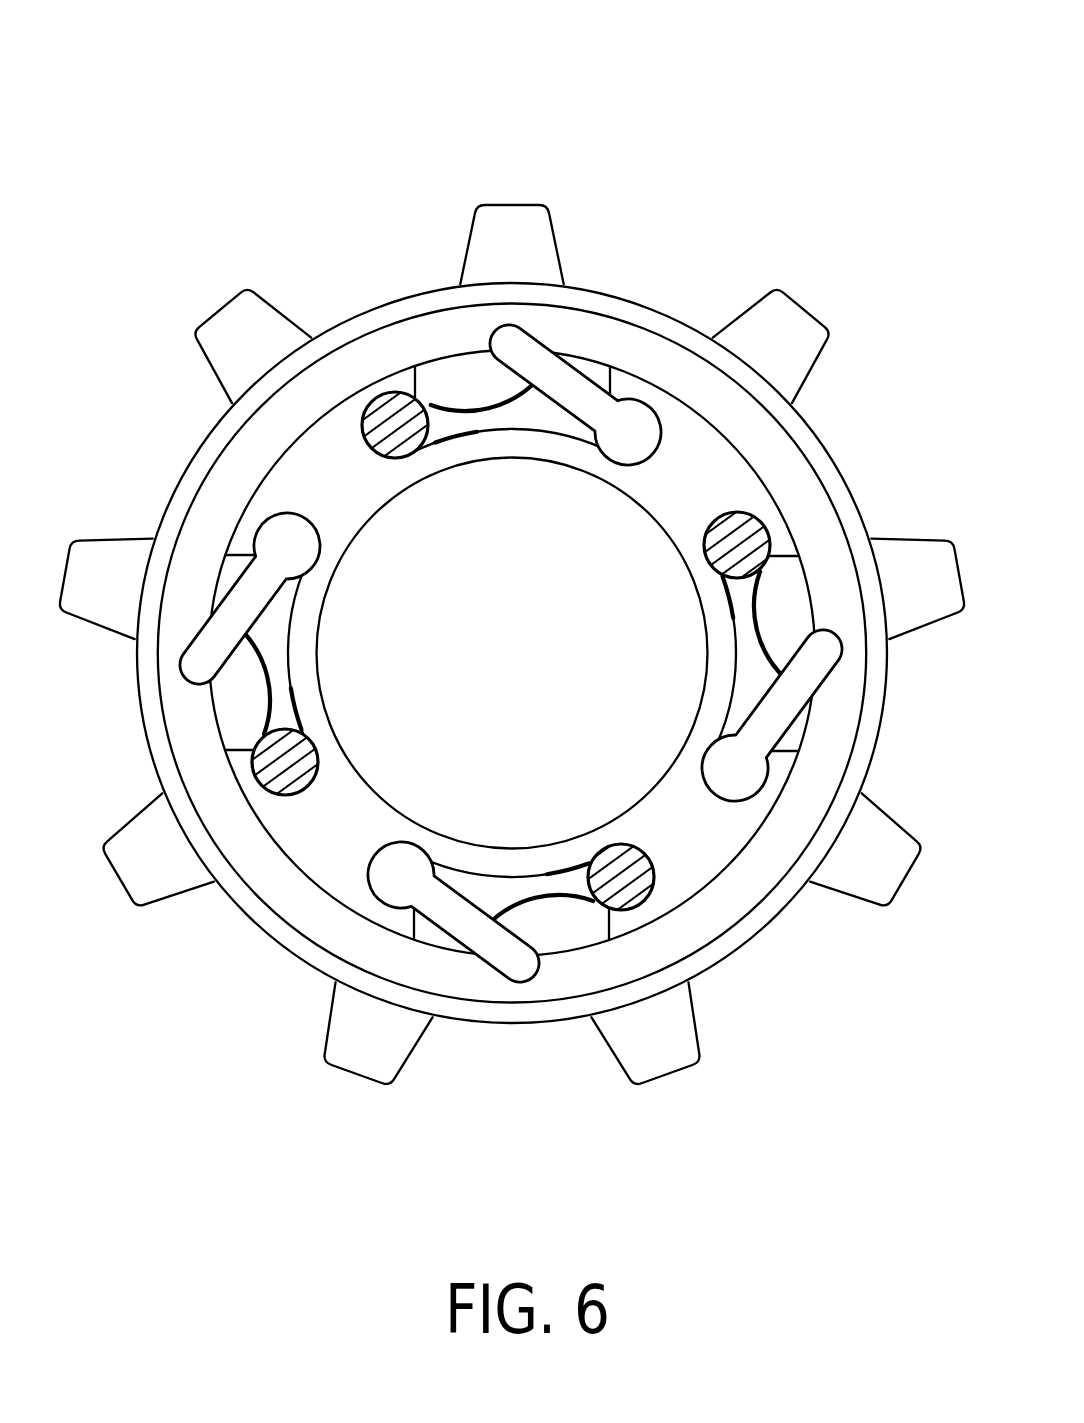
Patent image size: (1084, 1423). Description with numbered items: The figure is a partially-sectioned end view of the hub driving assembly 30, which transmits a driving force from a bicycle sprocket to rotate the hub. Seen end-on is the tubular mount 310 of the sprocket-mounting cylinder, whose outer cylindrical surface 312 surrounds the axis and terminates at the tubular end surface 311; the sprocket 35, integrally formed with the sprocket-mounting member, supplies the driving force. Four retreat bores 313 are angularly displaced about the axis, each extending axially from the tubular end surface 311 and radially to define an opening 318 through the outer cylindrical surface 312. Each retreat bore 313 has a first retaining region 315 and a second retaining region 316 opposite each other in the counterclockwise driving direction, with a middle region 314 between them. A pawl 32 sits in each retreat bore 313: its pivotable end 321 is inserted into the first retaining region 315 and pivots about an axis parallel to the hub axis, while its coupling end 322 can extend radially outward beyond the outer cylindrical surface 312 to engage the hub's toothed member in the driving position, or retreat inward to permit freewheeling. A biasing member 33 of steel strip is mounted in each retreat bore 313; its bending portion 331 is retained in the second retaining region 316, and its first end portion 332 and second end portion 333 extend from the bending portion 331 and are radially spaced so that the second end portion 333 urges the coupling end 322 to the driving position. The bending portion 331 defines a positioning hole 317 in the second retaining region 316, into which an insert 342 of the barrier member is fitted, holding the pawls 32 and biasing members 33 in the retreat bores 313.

The hub driving assembly 30 is at (391, 137).
The pawl 32 is at (603, 299).
The pivotable end 321 is at (625, 427).
The coupling end 322 is at (465, 408).
The biasing member 33 is at (306, 404).
The bending portion 331 is at (306, 415).
The first end portion 332 is at (440, 437).
The second end portion 333 is at (306, 404).
The sprocket 35 is at (790, 325).
The tubular mount 310 is at (230, 460).
The tubular end surface 311 is at (295, 830).
The outer cylindrical surface 312 is at (722, 935).
The retreat bore 313 is at (503, 892).
The middle region 314 is at (464, 873).
The first retaining region 315 is at (367, 880).
The second retaining region 316 is at (642, 843).
The positioning hole 317 is at (395, 440).
The opening 318 is at (567, 948).
The insert 342 is at (255, 782).